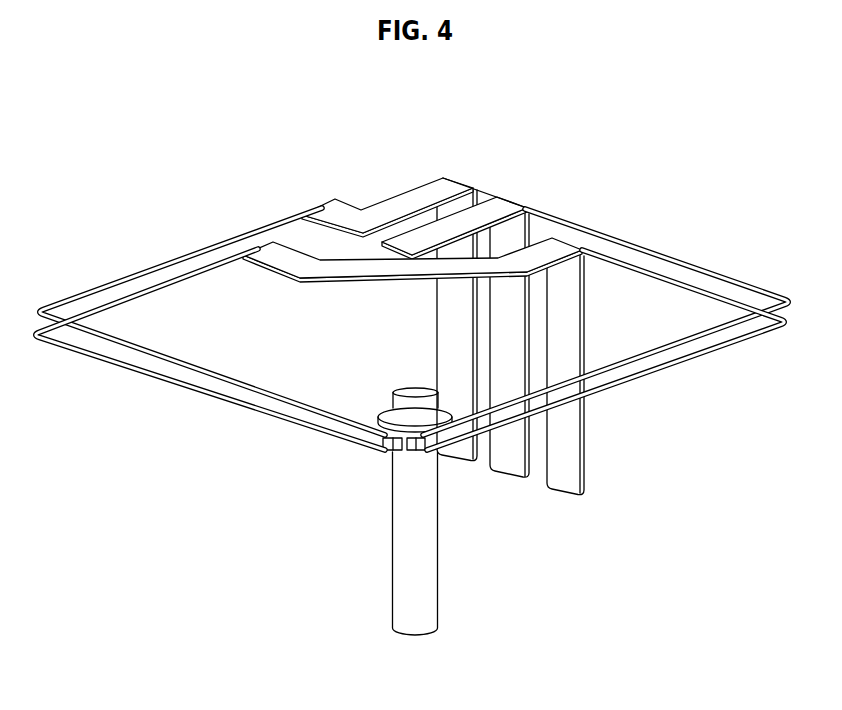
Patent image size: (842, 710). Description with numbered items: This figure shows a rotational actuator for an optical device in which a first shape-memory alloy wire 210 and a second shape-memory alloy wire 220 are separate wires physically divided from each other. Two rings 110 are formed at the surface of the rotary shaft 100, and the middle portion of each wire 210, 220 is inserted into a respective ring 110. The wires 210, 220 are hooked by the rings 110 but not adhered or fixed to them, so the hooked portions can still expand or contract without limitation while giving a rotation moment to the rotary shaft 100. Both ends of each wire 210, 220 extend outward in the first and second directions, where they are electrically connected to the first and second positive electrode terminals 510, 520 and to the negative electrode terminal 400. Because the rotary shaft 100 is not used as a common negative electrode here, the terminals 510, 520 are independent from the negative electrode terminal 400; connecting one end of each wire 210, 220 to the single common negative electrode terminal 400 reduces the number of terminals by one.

The rotary shaft 100 is at (381, 550).
The rings 110 is at (400, 446).
The first shape-memory alloy wire 210 is at (677, 367).
The second shape-memory alloy wire 220 is at (205, 395).
The negative electrode terminal 400 is at (297, 259).
The first positive electrode terminal 510 is at (458, 223).
The second positive electrode terminal 520 is at (384, 210).